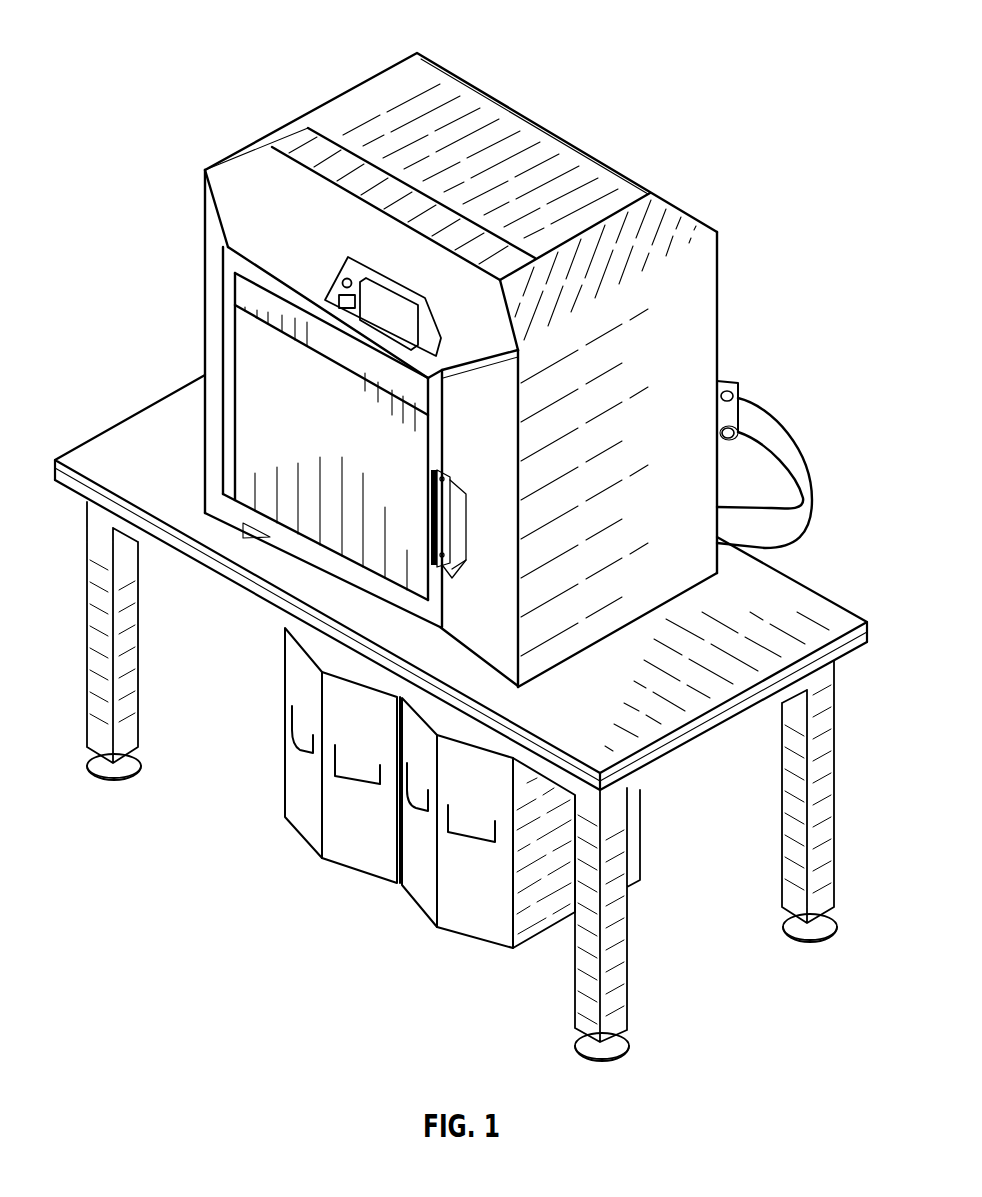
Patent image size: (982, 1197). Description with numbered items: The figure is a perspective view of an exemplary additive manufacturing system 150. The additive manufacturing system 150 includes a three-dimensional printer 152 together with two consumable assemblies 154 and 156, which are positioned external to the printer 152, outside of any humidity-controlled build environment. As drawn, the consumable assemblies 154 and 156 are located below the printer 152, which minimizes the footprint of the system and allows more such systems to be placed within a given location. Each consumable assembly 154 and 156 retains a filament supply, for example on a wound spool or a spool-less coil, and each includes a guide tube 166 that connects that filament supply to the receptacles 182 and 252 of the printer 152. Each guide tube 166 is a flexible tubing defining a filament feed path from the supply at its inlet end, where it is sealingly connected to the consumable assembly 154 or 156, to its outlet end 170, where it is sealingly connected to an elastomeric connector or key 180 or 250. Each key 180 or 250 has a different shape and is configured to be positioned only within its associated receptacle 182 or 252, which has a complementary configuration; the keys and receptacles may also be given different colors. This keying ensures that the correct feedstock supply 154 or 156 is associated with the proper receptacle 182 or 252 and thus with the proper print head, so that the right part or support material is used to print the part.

The additive manufacturing system 150 is at (283, 50).
The 3D printer 152 is at (478, 109).
The consumable assembly 154 is at (345, 872).
The consumable assembly 156 is at (462, 936).
The guide tube 166 is at (790, 512).
The outlet end 170 is at (760, 447).
The elastomeric connector or key 180 is at (720, 431).
The receptacle 182 is at (726, 444).
The elastomeric connector or key 250 is at (720, 392).
The receptacle 252 is at (736, 383).